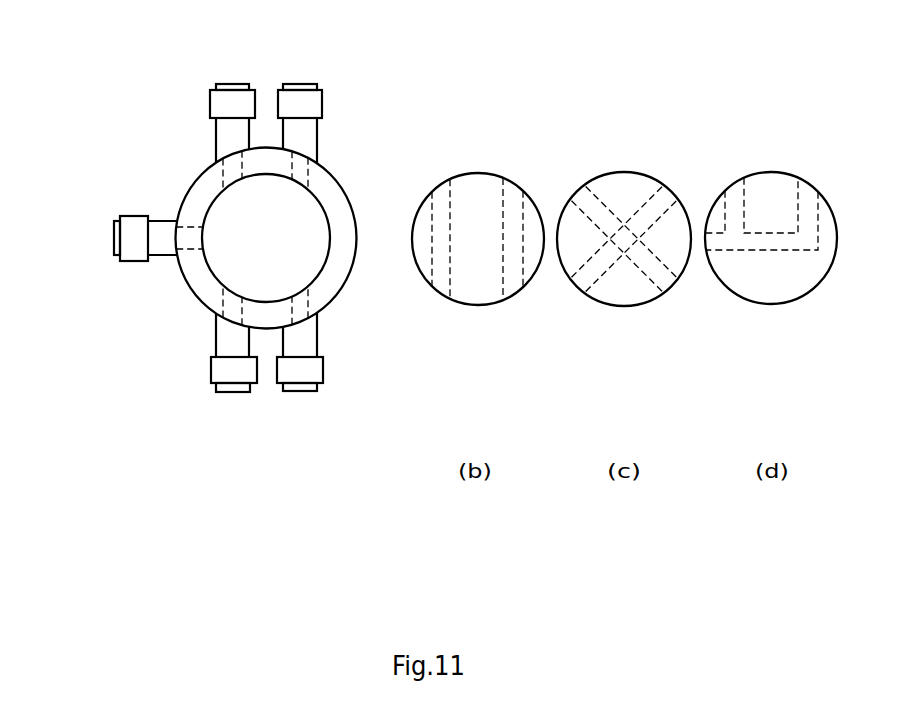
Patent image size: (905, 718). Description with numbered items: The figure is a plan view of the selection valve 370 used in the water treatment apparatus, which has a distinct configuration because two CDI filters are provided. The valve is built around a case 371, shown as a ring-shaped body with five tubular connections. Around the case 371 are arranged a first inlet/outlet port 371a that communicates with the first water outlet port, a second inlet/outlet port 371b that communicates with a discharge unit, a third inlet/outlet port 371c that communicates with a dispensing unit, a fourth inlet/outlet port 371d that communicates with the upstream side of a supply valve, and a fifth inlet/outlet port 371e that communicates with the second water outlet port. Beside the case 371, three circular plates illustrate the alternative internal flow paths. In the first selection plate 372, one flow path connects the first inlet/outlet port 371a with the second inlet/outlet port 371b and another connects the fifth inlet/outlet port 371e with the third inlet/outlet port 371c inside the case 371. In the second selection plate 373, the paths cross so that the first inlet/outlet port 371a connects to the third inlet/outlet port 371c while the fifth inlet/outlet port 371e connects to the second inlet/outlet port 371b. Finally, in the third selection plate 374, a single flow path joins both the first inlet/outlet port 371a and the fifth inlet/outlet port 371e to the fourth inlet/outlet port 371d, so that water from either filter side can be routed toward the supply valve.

The selection valve 370 is at (165, 307).
The case 371 is at (328, 187).
The first inlet/outlet port 371a is at (232, 84).
The second inlet/outlet port 371b is at (213, 388).
The third inlet/outlet port 371c is at (318, 390).
The fourth inlet/outlet port 371d is at (115, 237).
The fifth inlet/outlet port 371e is at (298, 84).
The first selection plate 372 is at (490, 182).
The second selection plate 373 is at (640, 182).
The third selection plate 374 is at (785, 182).